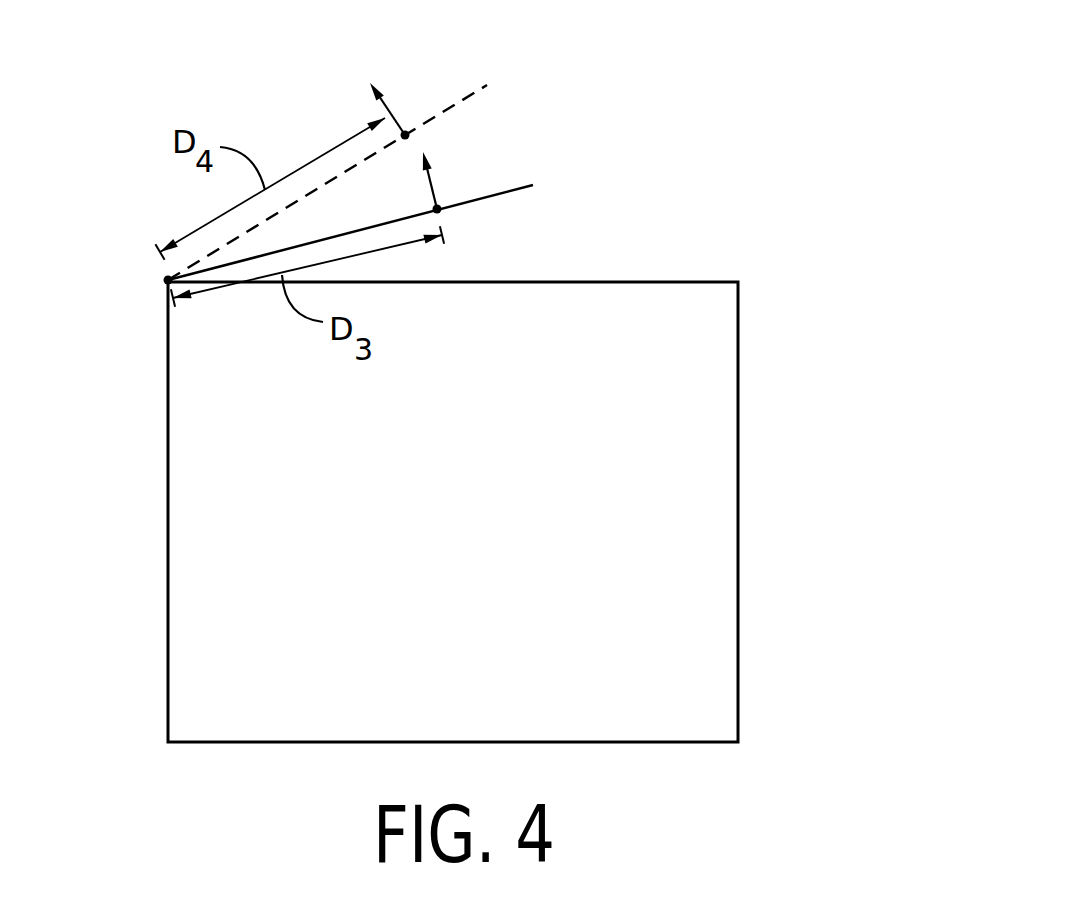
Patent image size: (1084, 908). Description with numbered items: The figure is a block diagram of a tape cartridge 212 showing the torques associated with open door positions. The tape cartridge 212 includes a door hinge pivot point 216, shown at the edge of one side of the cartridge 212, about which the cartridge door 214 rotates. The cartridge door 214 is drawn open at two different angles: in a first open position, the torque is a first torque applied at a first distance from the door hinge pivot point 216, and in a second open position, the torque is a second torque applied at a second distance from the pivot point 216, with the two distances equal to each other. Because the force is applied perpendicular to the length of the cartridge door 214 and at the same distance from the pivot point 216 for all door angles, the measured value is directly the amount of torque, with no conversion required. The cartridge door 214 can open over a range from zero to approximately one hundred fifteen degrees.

The tape cartridge 212 is at (818, 285).
The cartridge door 214 is at (503, 193).
The door hinge pivot point 216 is at (163, 280).